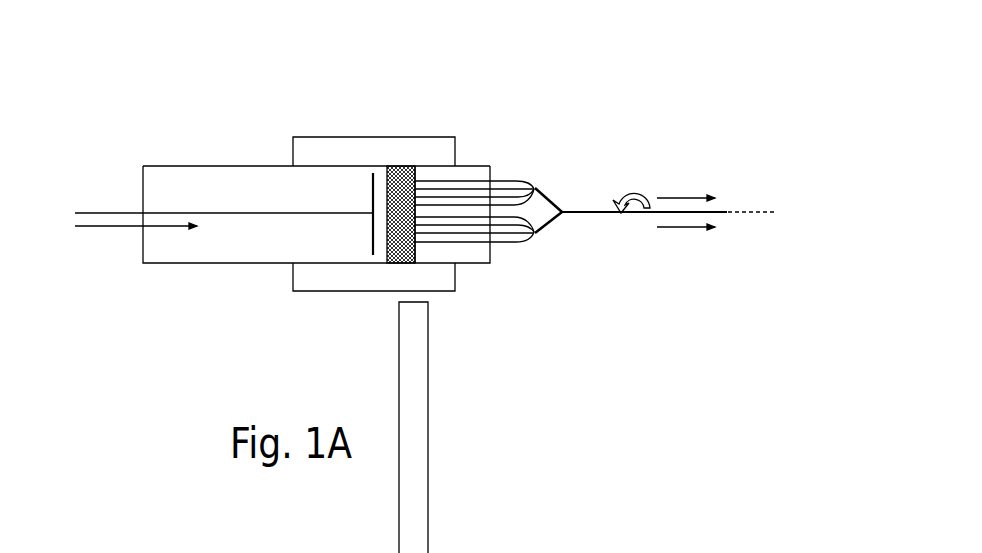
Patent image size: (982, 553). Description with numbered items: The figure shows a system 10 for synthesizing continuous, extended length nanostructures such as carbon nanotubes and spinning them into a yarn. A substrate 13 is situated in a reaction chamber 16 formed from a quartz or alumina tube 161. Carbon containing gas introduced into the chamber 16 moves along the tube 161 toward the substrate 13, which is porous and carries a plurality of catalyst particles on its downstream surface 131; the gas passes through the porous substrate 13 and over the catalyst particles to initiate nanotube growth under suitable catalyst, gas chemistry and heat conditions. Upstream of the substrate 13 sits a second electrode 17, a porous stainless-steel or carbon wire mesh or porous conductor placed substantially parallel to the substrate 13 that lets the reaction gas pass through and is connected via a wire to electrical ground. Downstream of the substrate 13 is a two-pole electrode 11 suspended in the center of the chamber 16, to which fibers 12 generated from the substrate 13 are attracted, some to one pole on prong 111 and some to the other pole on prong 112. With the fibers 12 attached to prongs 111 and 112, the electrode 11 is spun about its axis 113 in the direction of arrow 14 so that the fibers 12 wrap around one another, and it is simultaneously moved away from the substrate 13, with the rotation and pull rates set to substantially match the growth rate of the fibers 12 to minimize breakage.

The system 10 is at (138, 93).
The two-pole electrode 11 is at (605, 214).
The prong 111 is at (539, 188).
The prong 112 is at (541, 234).
The axis 113 is at (765, 212).
The fibers 12 is at (498, 207).
The substrate 13 is at (385, 262).
The downstream surface 131 is at (415, 177).
The arrow 14 is at (638, 192).
The reaction chamber 16 is at (253, 237).
The tube 161 is at (185, 165).
The second electrode 17 is at (372, 195).